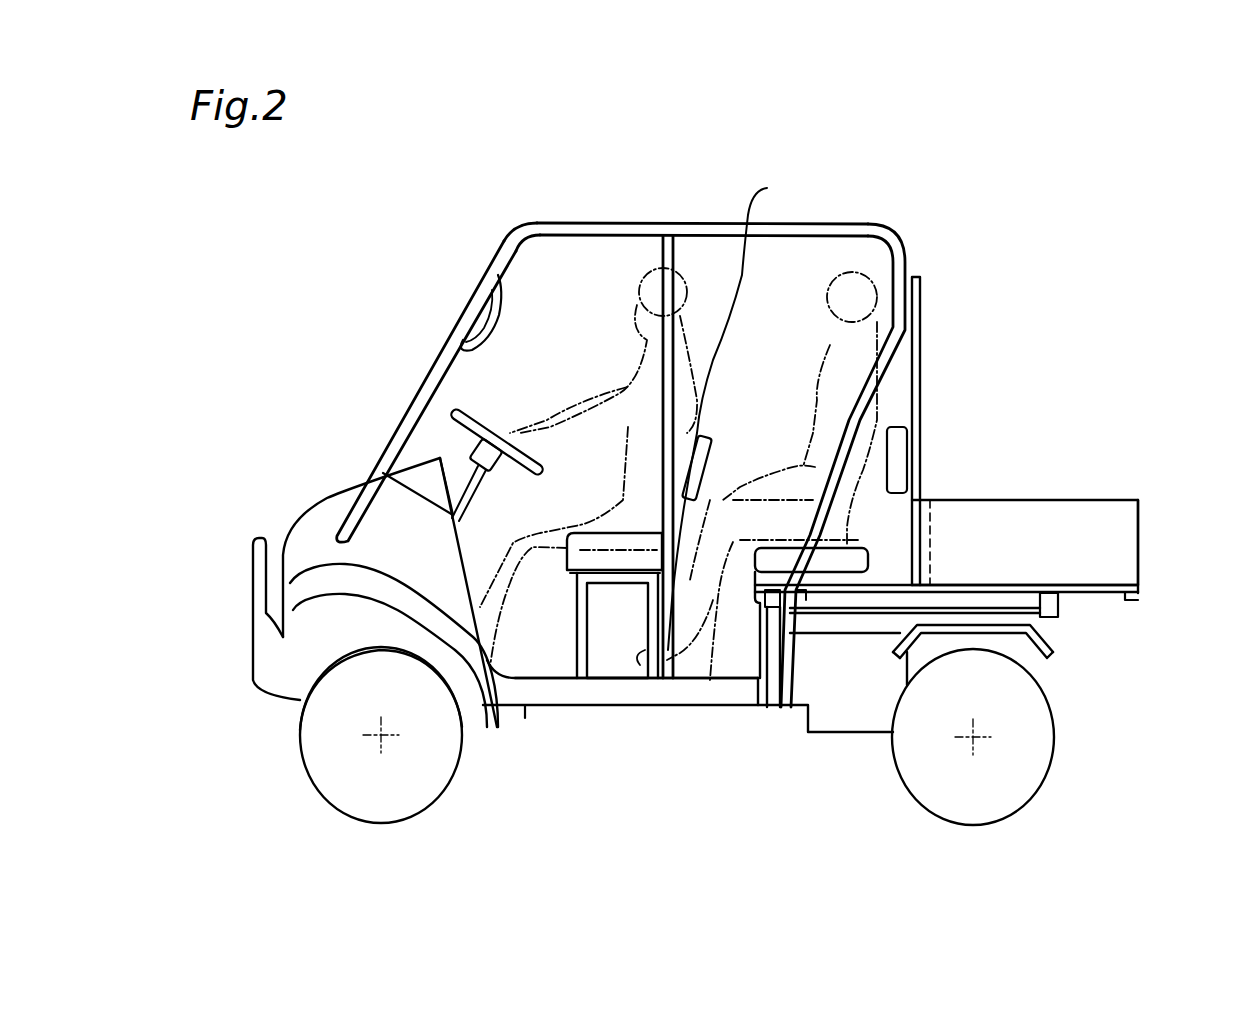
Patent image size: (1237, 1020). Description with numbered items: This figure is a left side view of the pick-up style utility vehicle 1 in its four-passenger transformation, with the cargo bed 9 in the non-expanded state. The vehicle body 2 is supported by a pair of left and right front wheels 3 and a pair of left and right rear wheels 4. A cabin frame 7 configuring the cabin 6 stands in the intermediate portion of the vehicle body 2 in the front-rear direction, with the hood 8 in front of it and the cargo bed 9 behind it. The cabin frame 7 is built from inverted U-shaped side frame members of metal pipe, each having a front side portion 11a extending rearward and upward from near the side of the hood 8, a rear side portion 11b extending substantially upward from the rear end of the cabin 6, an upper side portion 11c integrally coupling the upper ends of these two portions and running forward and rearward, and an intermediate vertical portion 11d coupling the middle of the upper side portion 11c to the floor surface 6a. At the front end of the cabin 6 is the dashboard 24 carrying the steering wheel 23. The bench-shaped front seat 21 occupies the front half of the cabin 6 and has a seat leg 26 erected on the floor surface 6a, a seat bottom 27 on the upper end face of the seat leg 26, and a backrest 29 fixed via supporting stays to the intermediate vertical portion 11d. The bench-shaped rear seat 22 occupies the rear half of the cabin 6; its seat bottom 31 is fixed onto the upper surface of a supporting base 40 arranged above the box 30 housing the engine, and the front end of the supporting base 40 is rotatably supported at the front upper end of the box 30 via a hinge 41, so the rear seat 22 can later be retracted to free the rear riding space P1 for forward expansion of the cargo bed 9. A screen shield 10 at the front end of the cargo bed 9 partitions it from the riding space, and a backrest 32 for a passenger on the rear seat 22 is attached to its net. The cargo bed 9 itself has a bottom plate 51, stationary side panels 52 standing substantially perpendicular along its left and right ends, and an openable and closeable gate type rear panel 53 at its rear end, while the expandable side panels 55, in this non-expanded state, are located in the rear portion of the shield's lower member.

The pick-up style utility vehicle 1 is at (865, 211).
The vehicle body 2 is at (525, 712).
The front wheels 3 is at (352, 790).
The rear wheels 4 is at (983, 808).
The cabin 6 is at (578, 385).
The floor surface 6a is at (620, 680).
The cabin frame 7 is at (675, 415).
The hood 8 is at (292, 523).
The cargo bed 9 is at (996, 476).
The screen shield 10 is at (915, 277).
The front side portion 11a is at (435, 353).
The rear side portion 11b is at (902, 328).
The upper side portion 11c is at (620, 224).
The intermediate vertical portion 11d is at (650, 310).
The front seat 21 is at (583, 652).
The rear seat 22 is at (761, 527).
The steering wheel 23 is at (462, 412).
The dashboard 24 is at (387, 460).
The seat leg 26 is at (551, 575).
The seat bottom 27 is at (588, 545).
The backrest 29 is at (712, 407).
The box 30 is at (820, 690).
The seat bottom 31 is at (828, 567).
The backrest 32 is at (907, 447).
The supporting base 40 is at (768, 568).
The hinge 41 is at (757, 640).
The bottom plate 51 is at (1120, 595).
The stationary side panels 52 is at (1067, 530).
The rear panel 53 is at (1140, 540).
The expandable side panels 55 is at (933, 517).
The rear riding space P1 is at (796, 384).